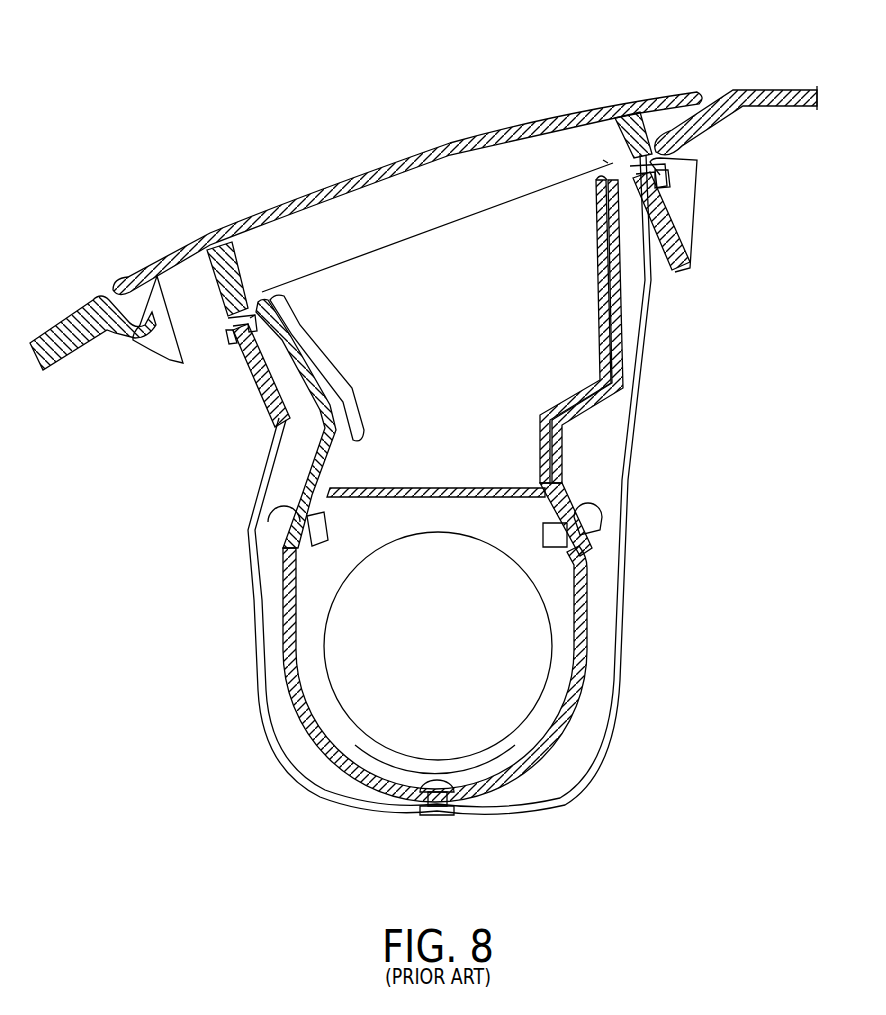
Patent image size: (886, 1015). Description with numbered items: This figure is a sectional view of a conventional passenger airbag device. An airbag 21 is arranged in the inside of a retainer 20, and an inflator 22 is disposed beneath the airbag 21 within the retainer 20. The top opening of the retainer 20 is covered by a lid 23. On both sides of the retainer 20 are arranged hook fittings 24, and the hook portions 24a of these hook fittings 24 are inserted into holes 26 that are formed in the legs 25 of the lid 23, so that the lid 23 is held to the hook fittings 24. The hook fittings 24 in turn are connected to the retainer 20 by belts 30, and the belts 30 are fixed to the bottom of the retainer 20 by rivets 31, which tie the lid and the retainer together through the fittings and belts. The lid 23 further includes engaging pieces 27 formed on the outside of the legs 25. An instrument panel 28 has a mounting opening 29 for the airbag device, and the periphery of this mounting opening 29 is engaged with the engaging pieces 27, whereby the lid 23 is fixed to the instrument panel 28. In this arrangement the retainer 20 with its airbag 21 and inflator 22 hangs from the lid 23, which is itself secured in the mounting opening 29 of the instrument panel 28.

The retainer 20 is at (595, 583).
The airbag 21 is at (320, 363).
The inflator 22 is at (347, 573).
The lid 23 is at (534, 130).
The hook fitting 24 is at (217, 320).
The hook portion 24a is at (227, 340).
The leg 25 is at (283, 423).
The hole 26 is at (248, 318).
The engaging piece 27 is at (157, 353).
The instrument panel 28 is at (773, 88).
The mounting opening 29 is at (133, 340).
The belt 30 is at (613, 660).
The rivet 31 is at (435, 818).